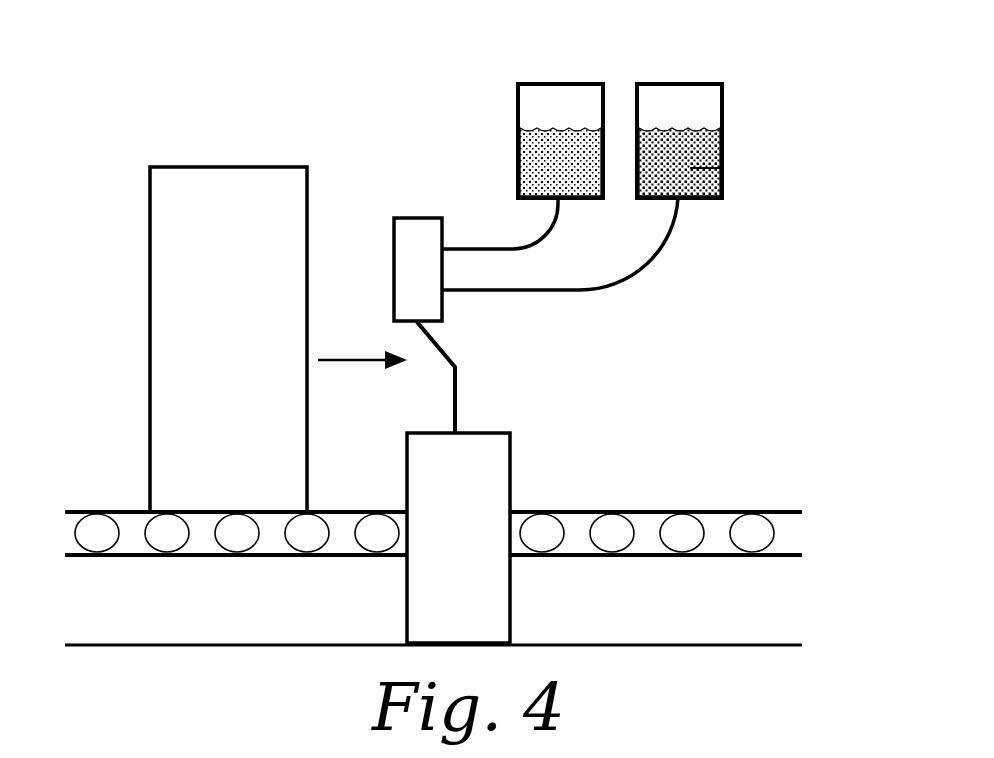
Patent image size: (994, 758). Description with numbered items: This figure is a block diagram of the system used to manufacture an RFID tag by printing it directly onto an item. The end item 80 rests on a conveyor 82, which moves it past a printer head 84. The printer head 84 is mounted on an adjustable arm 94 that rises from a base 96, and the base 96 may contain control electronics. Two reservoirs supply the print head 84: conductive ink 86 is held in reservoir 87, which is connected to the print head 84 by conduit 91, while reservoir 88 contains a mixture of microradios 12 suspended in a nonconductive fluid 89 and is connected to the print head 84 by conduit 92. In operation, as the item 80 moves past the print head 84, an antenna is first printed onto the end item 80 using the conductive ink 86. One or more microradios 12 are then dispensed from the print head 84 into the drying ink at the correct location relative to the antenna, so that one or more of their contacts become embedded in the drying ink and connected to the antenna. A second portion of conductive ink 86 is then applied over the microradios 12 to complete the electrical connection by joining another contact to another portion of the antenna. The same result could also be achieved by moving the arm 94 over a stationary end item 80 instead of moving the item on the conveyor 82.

The microradios 12 is at (720, 168).
The end item 80 is at (228, 339).
The conveyor 82 is at (127, 512).
The printer head 84 is at (418, 269).
The conductive ink 86 is at (552, 172).
The reservoir 87 is at (518, 104).
The reservoir 88 is at (722, 108).
The nonconductive fluid 89 is at (698, 150).
The conduit 91 is at (540, 235).
The conduit 92 is at (643, 268).
The adjustable arm 94 is at (458, 367).
The base 96 is at (458, 538).